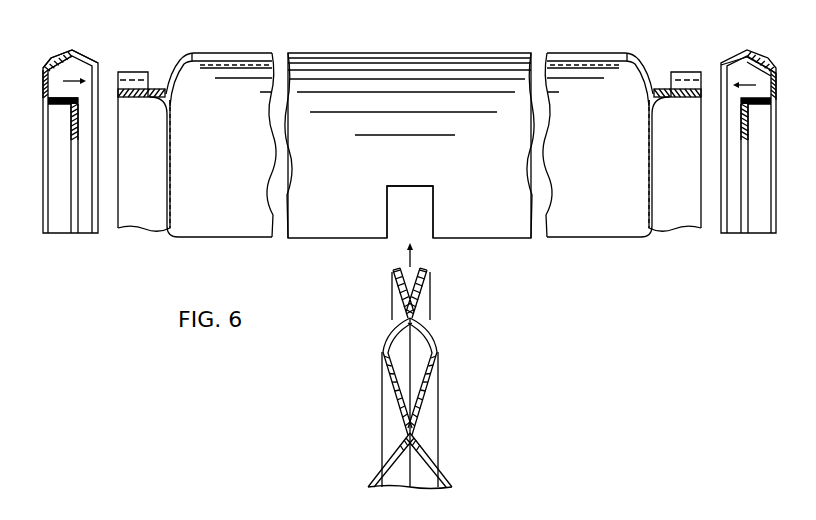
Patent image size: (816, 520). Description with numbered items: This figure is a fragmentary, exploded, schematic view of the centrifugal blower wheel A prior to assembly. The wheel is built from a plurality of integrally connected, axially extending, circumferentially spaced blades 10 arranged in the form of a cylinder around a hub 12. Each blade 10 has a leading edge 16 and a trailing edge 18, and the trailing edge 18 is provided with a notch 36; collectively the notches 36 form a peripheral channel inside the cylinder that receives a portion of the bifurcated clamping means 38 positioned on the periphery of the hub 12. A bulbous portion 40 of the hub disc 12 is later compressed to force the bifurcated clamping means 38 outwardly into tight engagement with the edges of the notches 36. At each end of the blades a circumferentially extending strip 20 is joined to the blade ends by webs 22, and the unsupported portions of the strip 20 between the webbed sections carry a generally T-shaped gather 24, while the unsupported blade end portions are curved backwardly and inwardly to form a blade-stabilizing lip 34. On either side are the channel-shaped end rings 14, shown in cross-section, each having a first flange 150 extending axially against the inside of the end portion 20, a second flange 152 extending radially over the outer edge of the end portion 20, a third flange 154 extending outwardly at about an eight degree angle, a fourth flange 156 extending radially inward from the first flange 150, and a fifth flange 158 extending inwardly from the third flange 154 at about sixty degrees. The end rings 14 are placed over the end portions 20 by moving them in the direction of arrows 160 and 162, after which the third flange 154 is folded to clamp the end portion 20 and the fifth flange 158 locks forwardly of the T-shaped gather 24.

The blades 10 is at (408, 72).
The hub 12 is at (377, 473).
The end ring 14 is at (72, 45).
The leading edge 16 is at (468, 60).
The trailing edge 18 is at (233, 238).
The circumferentially extending strip 20 is at (134, 103).
The web 22 is at (168, 92).
The T-shaped gather 24 is at (128, 67).
The blade-stabilizing lip 34 is at (165, 214).
The notch 36 is at (398, 190).
The bifurcated clamping means 38 is at (428, 300).
The bulbous portion 40 is at (440, 345).
The first flange 150 is at (66, 101).
The second flange 152 is at (45, 80).
The third flange 154 is at (56, 62).
The fourth flange 156 is at (70, 126).
The fifth flange 158 is at (90, 62).
The arrow 160 is at (66, 80).
The arrow 162 is at (755, 84).
The centrifugal blower wheel A is at (356, 46).